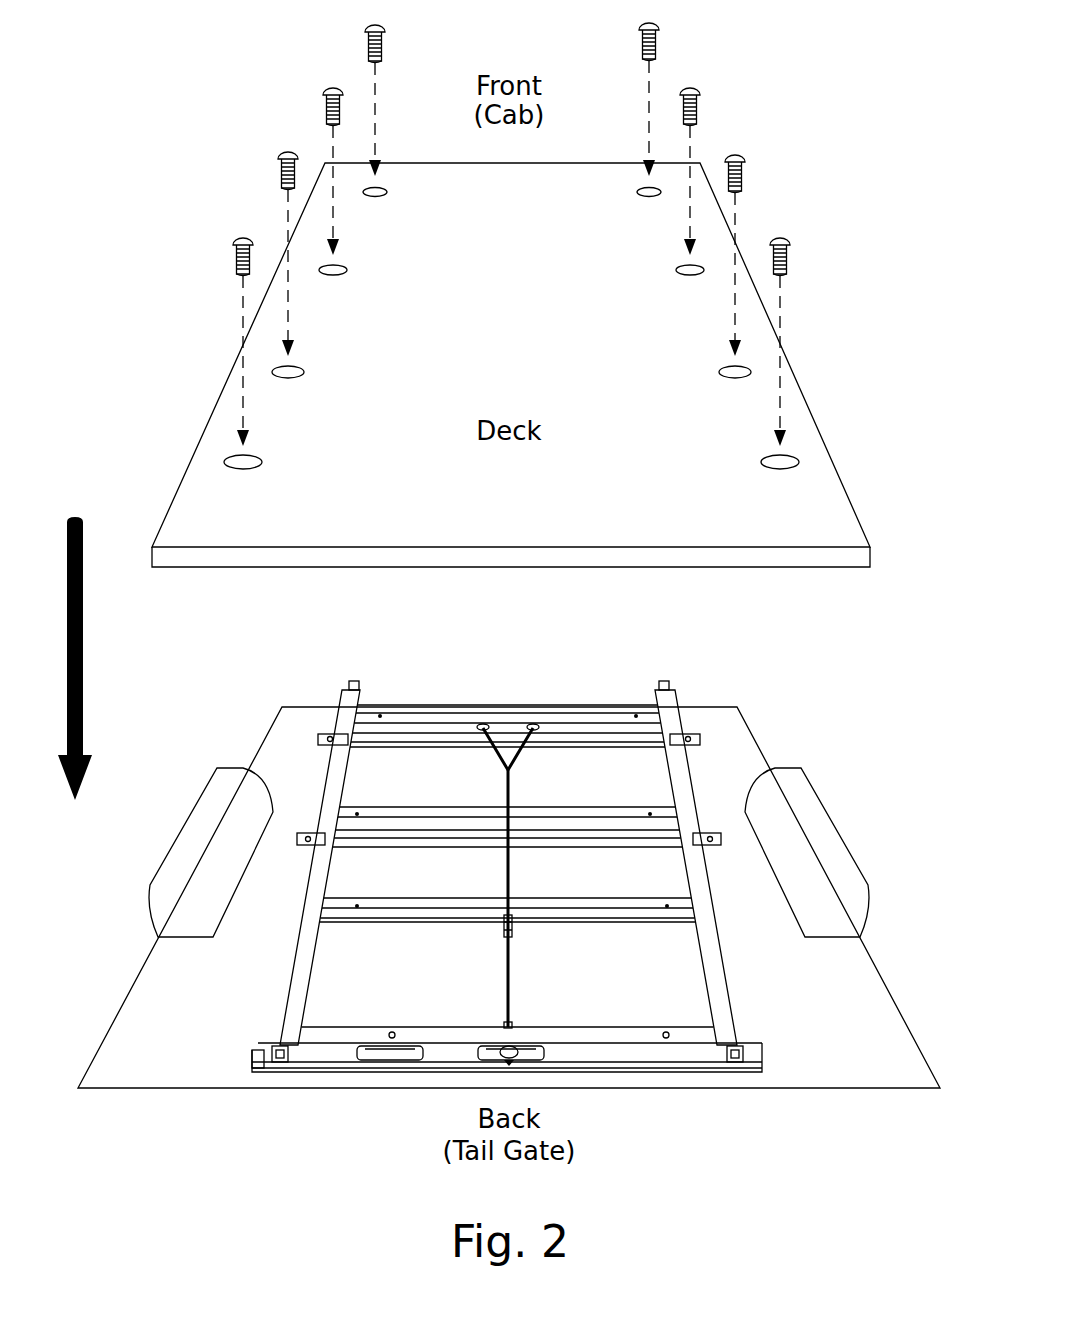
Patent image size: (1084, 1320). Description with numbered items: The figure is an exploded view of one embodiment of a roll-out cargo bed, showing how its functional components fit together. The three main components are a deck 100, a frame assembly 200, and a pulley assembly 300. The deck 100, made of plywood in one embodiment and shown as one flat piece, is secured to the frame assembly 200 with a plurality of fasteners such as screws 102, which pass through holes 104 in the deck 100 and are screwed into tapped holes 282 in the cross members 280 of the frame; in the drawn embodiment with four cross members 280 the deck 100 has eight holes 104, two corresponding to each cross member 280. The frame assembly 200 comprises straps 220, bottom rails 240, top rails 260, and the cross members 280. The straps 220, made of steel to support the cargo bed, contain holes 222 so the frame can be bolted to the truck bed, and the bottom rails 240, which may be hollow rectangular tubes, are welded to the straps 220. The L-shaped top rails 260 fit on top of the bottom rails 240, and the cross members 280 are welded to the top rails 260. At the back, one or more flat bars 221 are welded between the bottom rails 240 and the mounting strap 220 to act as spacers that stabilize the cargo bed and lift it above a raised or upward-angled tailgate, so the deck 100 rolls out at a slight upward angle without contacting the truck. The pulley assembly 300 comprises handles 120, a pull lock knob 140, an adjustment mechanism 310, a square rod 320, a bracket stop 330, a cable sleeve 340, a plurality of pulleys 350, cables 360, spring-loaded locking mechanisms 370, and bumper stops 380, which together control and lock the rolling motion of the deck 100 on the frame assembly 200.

The deck 100 is at (487, 318).
The screws 102 is at (660, 27).
The holes 104 is at (388, 193).
The handles 120 is at (400, 1062).
The pull lock knob 140 is at (514, 1046).
The frame assembly 200 is at (523, 877).
The straps 220 is at (330, 734).
The flat bars 221 is at (762, 1064).
The holes 222 is at (698, 738).
The bottom rails 240 is at (280, 1064).
The top rails 260 is at (300, 968).
The cross members 280 is at (412, 704).
The tapped holes 282 is at (357, 905).
The pulley assembly 300 is at (540, 826).
The adjustment mechanism 310 is at (503, 1024).
The square rod 320 is at (510, 878).
The bracket stop 330 is at (512, 926).
The cable sleeve 340 is at (510, 790).
The pulleys 350 is at (539, 724).
The cables 360 is at (493, 750).
The spring-loaded locking mechanisms 370 is at (654, 733).
The bumper stops 380 is at (350, 680).